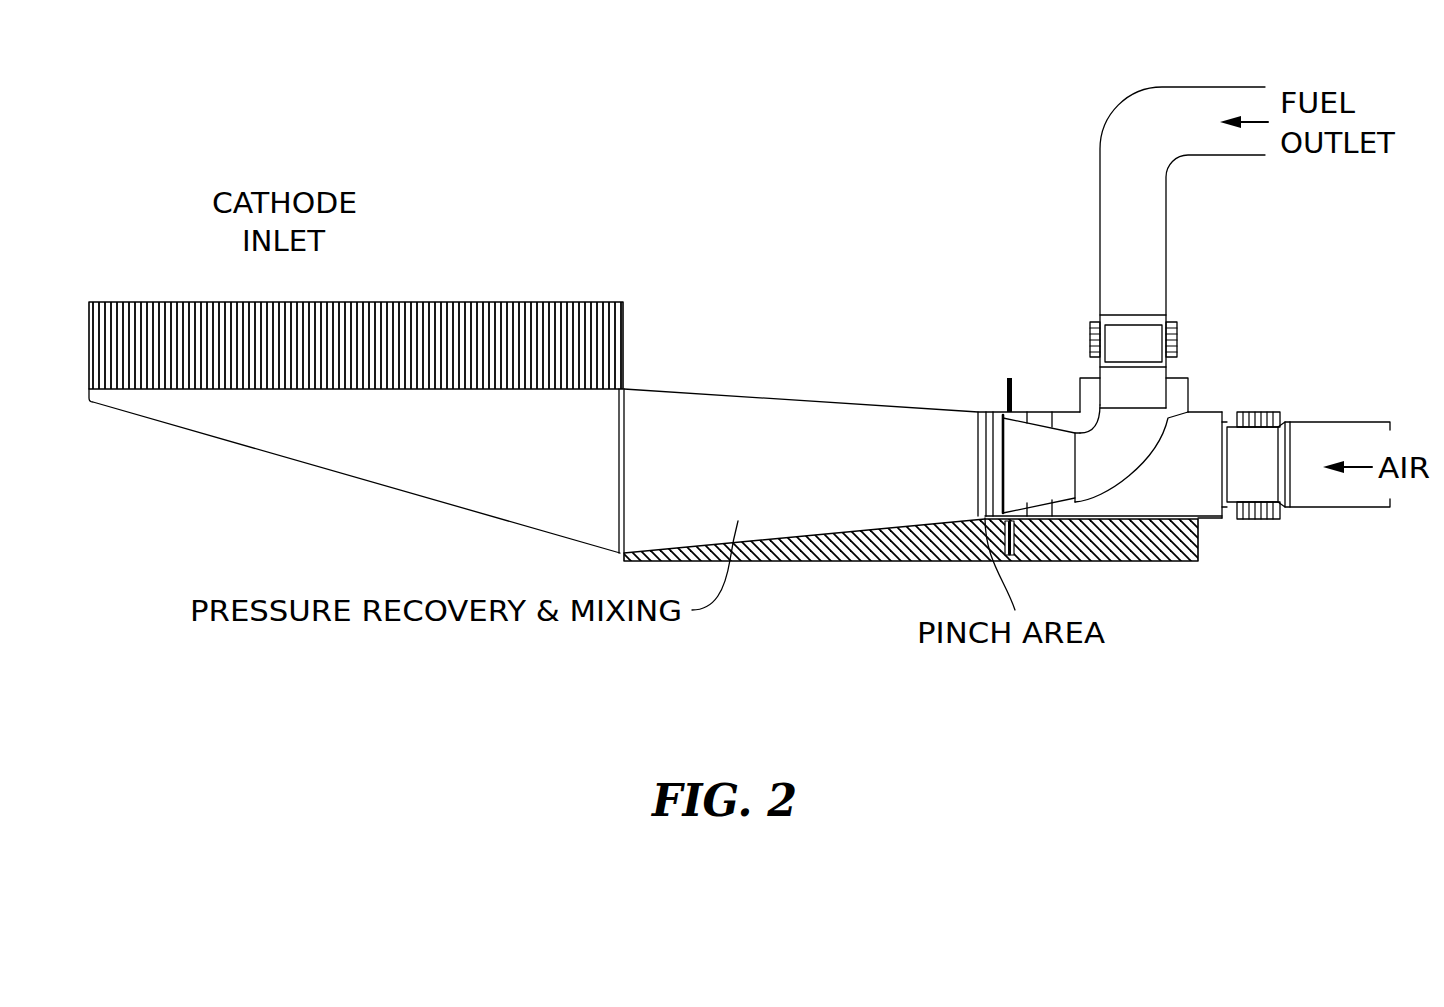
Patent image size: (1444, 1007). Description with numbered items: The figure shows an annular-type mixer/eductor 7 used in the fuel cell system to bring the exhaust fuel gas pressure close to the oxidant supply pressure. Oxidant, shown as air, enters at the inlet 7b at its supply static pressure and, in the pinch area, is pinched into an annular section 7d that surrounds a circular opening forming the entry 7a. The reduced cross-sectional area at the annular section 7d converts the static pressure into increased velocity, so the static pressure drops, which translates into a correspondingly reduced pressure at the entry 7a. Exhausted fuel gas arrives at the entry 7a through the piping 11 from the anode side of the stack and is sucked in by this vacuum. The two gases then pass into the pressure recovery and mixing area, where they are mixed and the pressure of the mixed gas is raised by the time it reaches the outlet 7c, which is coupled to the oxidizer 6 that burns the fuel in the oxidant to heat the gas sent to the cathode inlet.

The oxidizer 6 is at (493, 301).
The mixer/eductor 7 is at (802, 380).
The inlet 7a is at (978, 441).
The inlet 7b is at (1222, 450).
The outlet 7c is at (627, 462).
The annular section 7d is at (985, 500).
The piping 11 is at (1099, 217).